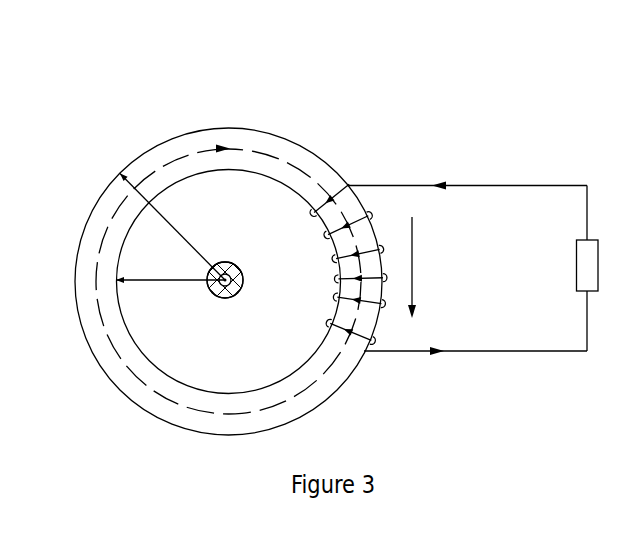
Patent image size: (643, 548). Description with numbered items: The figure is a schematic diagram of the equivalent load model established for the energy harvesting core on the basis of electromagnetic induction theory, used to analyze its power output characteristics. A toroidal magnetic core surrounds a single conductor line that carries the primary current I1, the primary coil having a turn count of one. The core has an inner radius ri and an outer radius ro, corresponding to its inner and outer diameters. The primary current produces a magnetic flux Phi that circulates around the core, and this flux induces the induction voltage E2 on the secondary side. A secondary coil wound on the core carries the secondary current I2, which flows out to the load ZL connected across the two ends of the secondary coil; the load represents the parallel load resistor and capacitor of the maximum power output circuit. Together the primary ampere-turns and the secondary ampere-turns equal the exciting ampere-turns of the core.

The primary current I1 is at (225, 296).
The secondary current I2 is at (468, 247).
The induction voltage E2 is at (431, 267).
The load impedance ZL is at (570, 269).
The magnetic flux Phi is at (228, 248).
The outer radius ro is at (172, 227).
The inner radius ri is at (170, 296).